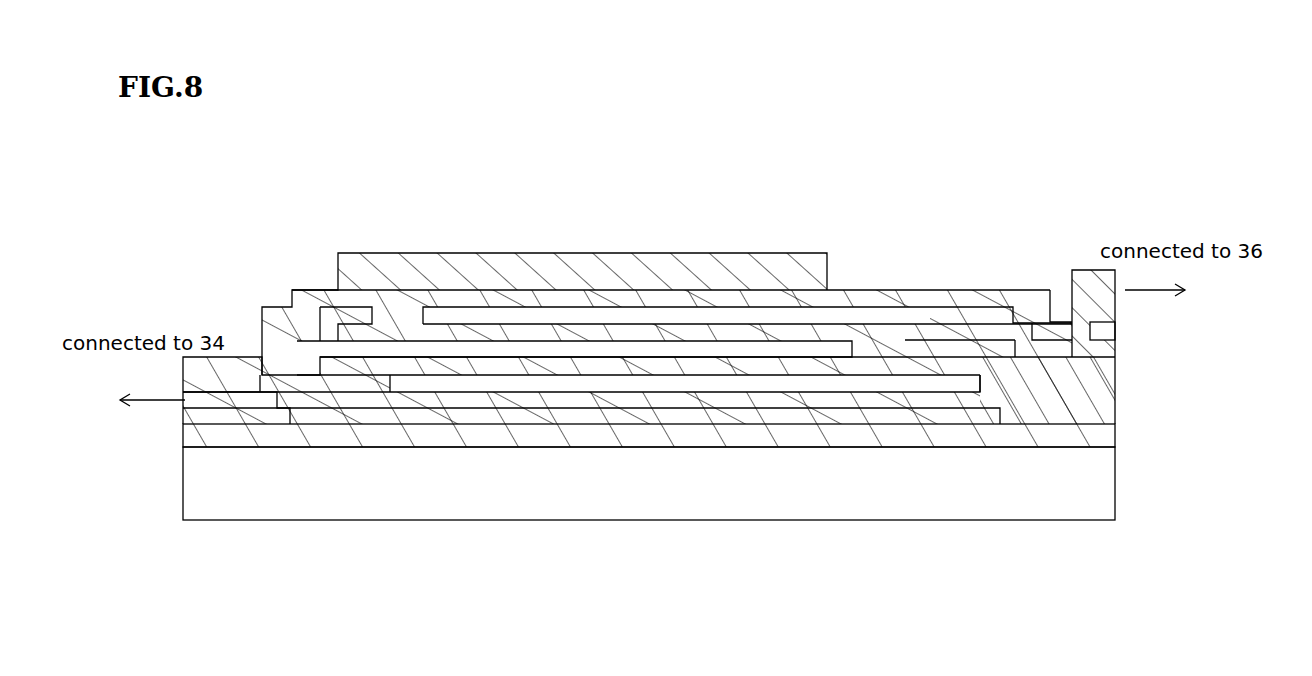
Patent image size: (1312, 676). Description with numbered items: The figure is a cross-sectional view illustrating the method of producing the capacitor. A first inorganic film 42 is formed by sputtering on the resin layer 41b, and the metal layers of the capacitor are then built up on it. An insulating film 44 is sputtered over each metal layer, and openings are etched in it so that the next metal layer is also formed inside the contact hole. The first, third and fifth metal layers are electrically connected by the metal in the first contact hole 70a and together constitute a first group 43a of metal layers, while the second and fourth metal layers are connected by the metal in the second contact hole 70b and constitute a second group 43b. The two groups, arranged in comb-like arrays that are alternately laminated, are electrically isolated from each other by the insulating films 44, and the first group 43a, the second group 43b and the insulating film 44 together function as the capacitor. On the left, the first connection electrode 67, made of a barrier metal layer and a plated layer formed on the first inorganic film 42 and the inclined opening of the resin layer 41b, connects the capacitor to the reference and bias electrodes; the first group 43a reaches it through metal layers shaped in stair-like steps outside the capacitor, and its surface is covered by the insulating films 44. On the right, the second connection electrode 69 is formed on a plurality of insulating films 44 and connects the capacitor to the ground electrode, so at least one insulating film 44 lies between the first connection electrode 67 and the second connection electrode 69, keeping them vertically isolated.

The resin layer 41b is at (1105, 480).
The first inorganic film 42 is at (1118, 432).
The insulating film 44 is at (1118, 376).
The first connection electrode 67 is at (185, 410).
The second connection electrode 69 is at (1120, 318).
The first group of metal layers 43a is at (410, 400).
The second group of metal layers 43b is at (885, 315).
The first contact hole 70a is at (333, 275).
The second contact hole 70b is at (977, 295).